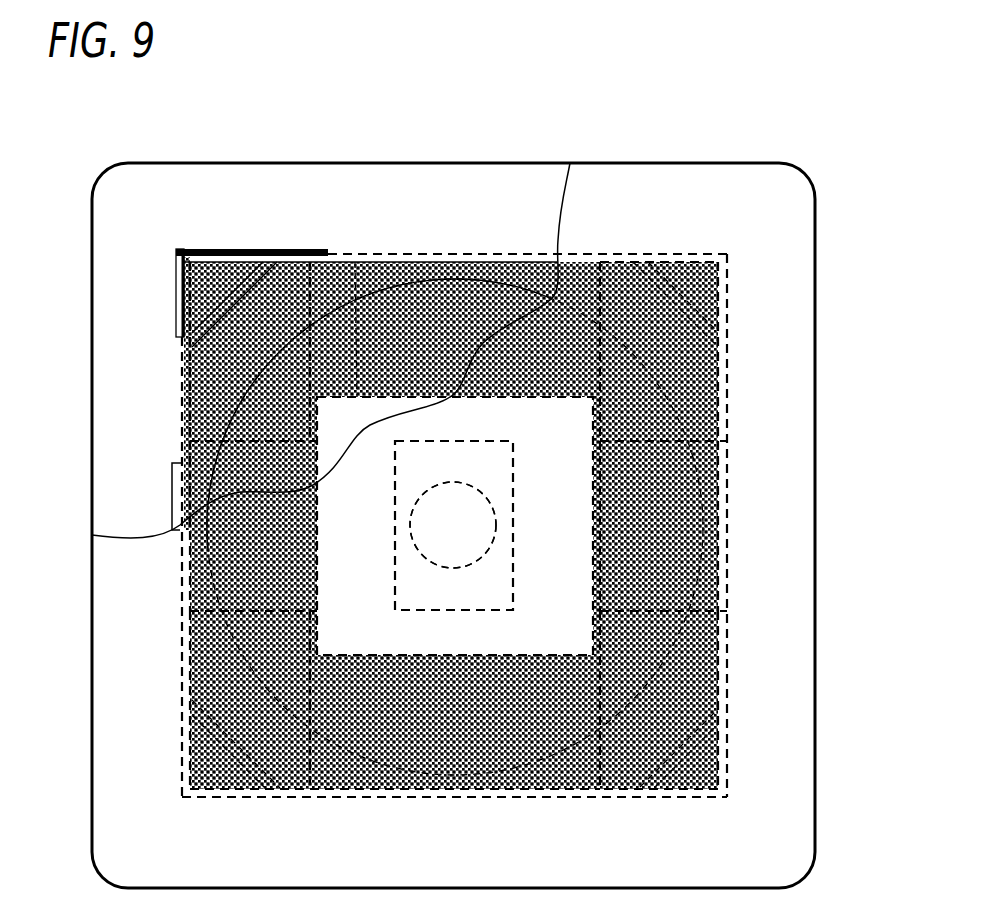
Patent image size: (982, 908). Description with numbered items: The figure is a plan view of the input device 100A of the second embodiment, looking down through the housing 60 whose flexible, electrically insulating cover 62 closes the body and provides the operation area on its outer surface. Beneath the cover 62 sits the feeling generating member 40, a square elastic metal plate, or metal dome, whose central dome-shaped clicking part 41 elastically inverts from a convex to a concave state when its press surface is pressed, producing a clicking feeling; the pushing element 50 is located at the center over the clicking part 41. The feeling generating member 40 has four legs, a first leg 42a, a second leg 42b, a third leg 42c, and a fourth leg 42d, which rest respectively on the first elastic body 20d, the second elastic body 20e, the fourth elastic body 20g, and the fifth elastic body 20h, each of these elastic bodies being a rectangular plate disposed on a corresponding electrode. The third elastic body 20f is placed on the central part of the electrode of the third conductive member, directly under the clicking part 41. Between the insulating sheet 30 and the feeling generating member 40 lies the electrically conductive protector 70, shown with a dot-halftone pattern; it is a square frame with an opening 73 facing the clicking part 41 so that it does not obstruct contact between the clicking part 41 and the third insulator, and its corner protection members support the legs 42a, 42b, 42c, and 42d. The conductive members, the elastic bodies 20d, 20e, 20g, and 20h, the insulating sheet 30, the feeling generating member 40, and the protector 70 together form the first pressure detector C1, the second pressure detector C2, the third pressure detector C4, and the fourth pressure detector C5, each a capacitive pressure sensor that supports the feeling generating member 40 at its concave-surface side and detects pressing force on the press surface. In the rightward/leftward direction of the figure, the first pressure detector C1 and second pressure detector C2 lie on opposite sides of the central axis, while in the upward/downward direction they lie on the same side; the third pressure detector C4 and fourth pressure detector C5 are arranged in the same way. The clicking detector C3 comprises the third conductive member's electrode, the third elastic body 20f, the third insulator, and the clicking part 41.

The input device 100A is at (307, 145).
The housing 60 is at (798, 303).
The cover 62 is at (637, 178).
The insulating sheet 30 is at (293, 249).
The protector 70 is at (176, 275).
The feeling generating member 40 is at (422, 277).
The clicking part 41 is at (493, 293).
The opening 73 is at (355, 262).
The first leg 42a is at (228, 797).
The second leg 42b is at (680, 797).
The third leg 42c is at (228, 275).
The fourth leg 42d is at (683, 262).
The first elastic body 20d is at (207, 660).
The second elastic body 20e is at (703, 670).
The third elastic body 20f is at (512, 455).
The fourth elastic body 20g is at (200, 390).
The fifth elastic body 20h is at (708, 393).
The pushing element 50 is at (490, 517).
The first pressure detector C1 is at (190, 733).
The second pressure detector C2 is at (690, 640).
The clicking detector C3 is at (477, 594).
The third pressure detector C4 is at (233, 317).
The fourth pressure detector C5 is at (658, 323).